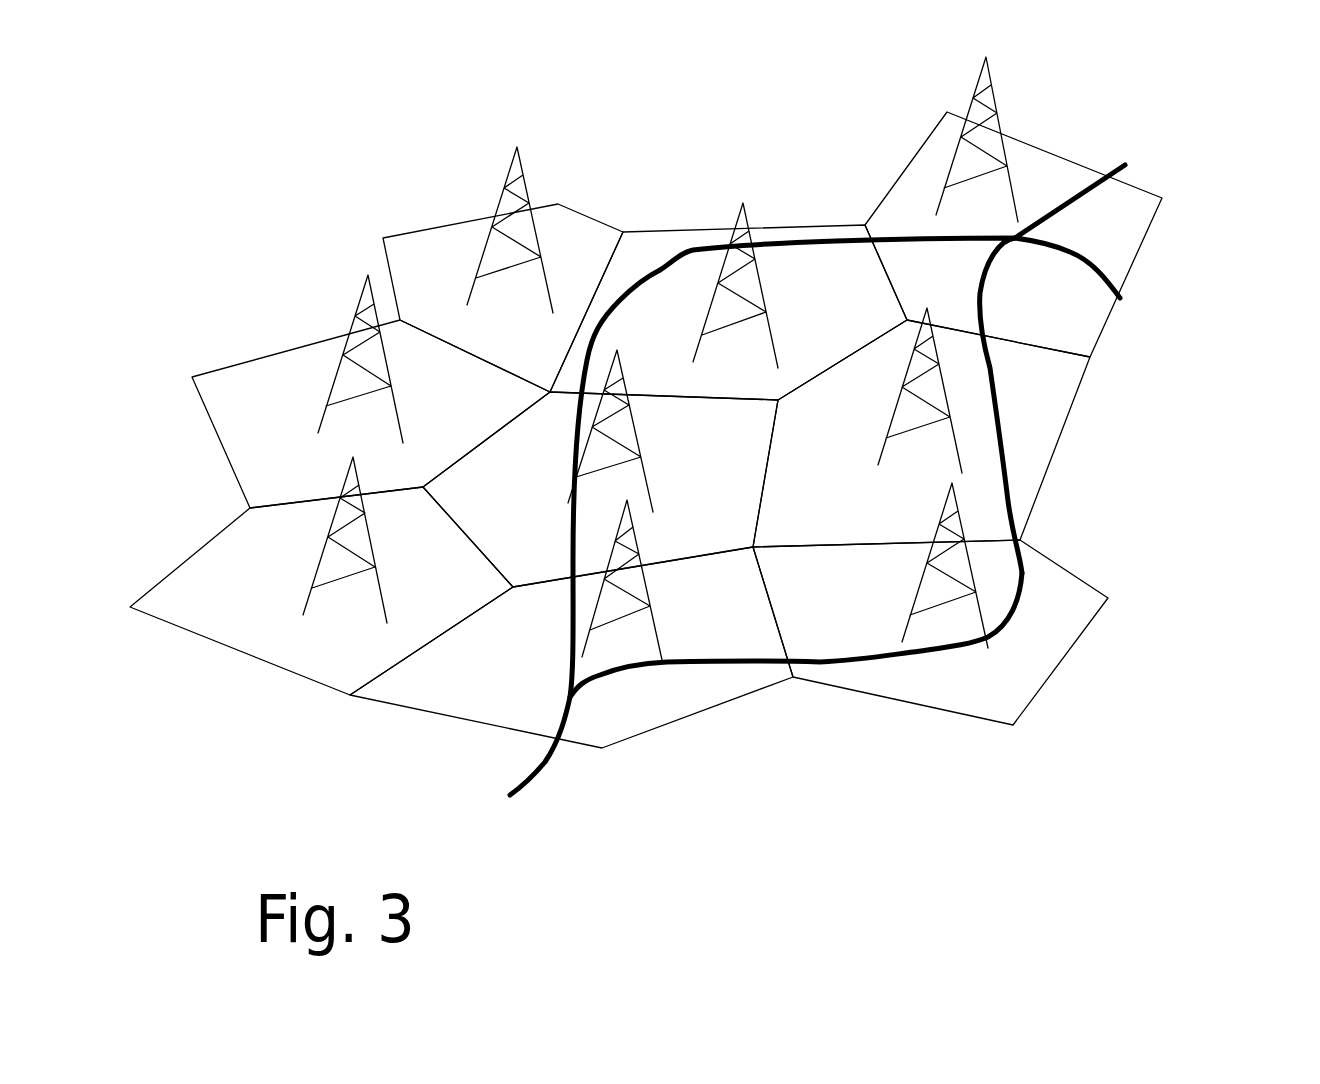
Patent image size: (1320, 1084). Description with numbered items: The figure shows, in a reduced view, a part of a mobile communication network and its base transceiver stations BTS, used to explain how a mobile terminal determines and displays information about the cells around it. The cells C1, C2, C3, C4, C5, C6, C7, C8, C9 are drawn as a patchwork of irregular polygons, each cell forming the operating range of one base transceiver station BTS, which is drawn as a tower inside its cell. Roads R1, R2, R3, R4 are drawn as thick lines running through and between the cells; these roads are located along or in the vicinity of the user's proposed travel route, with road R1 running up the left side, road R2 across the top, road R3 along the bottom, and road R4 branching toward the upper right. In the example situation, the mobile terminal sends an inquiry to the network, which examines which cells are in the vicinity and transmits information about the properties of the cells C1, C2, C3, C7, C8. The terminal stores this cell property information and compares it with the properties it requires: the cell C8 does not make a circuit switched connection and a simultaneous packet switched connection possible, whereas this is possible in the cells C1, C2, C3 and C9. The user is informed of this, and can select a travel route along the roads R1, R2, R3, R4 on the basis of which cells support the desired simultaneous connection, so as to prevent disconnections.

The base transceiver station BTS is at (353, 297).
The cell C1 is at (527, 698).
The cell C2 is at (1017, 698).
The cell C3 is at (845, 515).
The cell C4 is at (850, 325).
The cell C5 is at (542, 350).
The cell C6 is at (289, 435).
The cell C7 is at (365, 673).
The cell C8 is at (545, 512).
The cell C9 is at (1072, 315).
The road R1 is at (530, 770).
The road R2 is at (683, 253).
The road R3 is at (703, 663).
The road R4 is at (1060, 193).